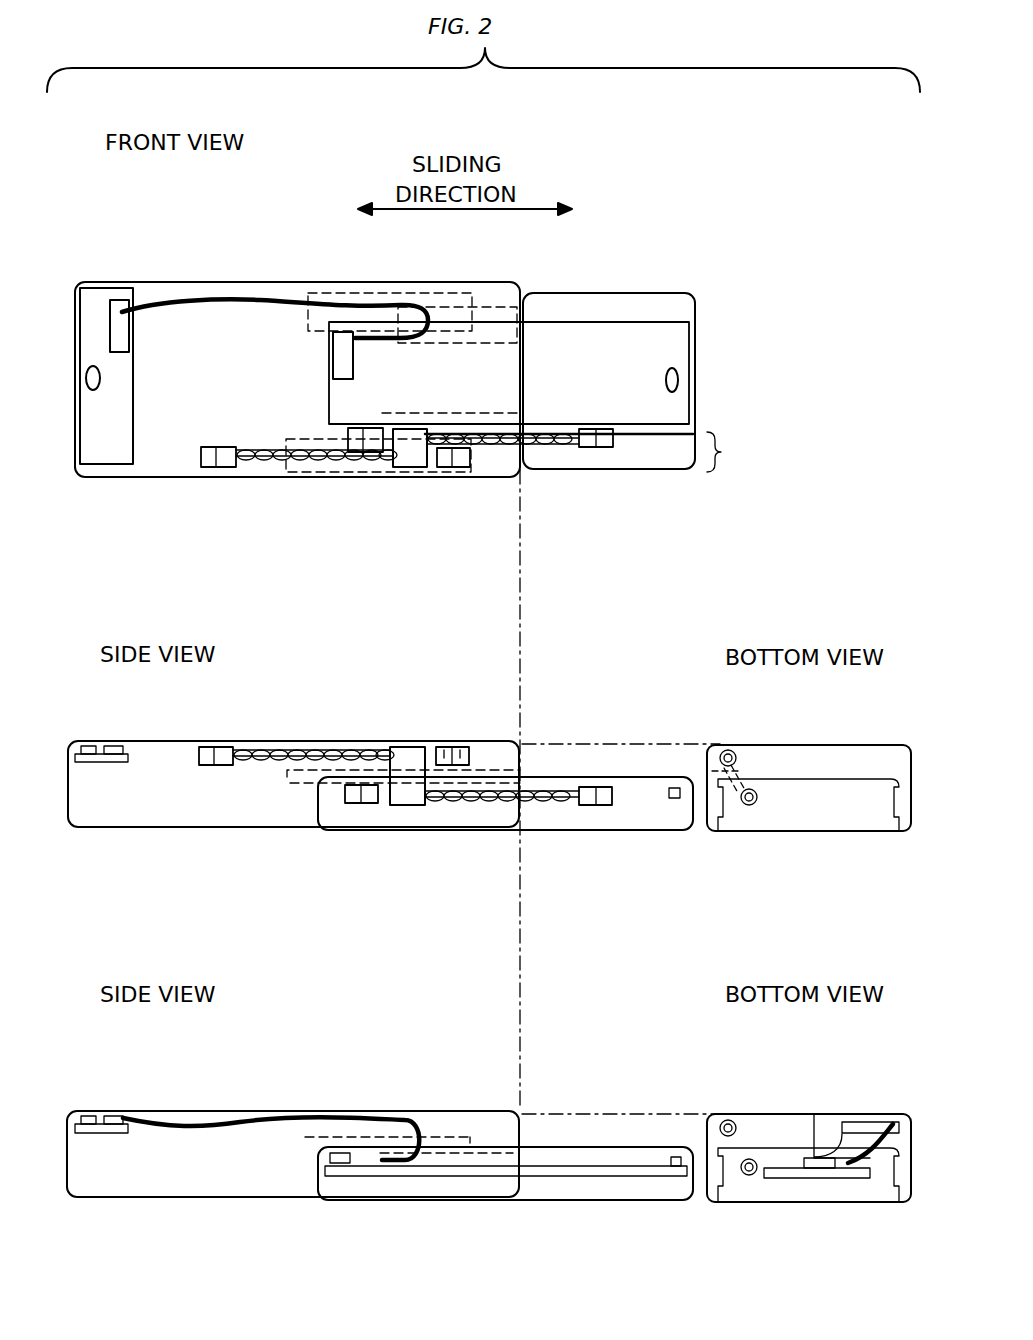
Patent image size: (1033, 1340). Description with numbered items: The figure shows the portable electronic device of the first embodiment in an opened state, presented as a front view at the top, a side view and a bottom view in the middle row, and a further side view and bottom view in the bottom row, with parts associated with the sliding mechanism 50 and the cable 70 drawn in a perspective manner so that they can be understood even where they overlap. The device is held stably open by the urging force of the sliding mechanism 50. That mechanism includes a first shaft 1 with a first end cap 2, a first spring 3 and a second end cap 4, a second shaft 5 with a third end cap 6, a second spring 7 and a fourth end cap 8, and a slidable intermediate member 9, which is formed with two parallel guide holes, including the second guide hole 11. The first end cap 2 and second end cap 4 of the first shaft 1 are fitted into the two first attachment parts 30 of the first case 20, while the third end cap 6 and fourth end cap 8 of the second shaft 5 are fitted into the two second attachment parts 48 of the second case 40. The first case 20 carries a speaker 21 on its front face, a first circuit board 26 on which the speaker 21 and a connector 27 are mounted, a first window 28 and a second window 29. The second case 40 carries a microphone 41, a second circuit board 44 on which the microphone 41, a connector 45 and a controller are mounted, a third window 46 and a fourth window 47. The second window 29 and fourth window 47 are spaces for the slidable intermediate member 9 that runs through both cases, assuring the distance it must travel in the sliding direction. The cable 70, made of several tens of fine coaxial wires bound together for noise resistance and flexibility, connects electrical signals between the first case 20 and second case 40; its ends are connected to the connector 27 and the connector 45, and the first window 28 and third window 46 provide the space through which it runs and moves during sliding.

The first shaft 1 is at (350, 472).
The first end cap 2 is at (222, 470).
The first spring 3 is at (312, 462).
The second end cap 4 is at (440, 470).
The second shaft 5 is at (590, 445).
The third end cap 6 is at (605, 440).
The second spring 7 is at (540, 445).
The fourth end cap 8 is at (375, 430).
The slidable intermediate member 9 is at (410, 450).
The second guide hole 11 is at (735, 755).
The first case 20 is at (258, 282).
The speaker 21 is at (102, 374).
The first circuit board 26 is at (100, 288).
The connector 27 is at (120, 300).
The first window 28 is at (415, 292).
The second window 29 is at (303, 440).
The first attachment parts 30 is at (208, 447).
The second case 40 is at (655, 292).
The microphone 41 is at (690, 385).
The second circuit board 44 is at (545, 325).
The connector 45 is at (355, 360).
The third window 46 is at (480, 310).
The fourth window 47 is at (500, 413).
The second attachment parts 48 is at (335, 432).
The sliding mechanism 50 is at (731, 452).
The cable 70 is at (290, 300).